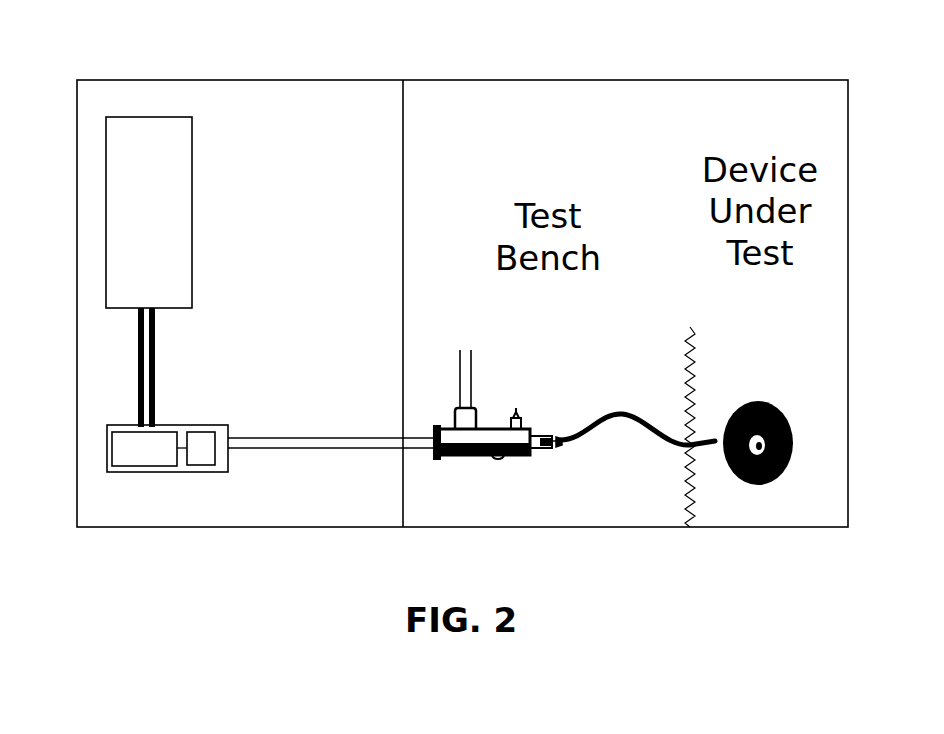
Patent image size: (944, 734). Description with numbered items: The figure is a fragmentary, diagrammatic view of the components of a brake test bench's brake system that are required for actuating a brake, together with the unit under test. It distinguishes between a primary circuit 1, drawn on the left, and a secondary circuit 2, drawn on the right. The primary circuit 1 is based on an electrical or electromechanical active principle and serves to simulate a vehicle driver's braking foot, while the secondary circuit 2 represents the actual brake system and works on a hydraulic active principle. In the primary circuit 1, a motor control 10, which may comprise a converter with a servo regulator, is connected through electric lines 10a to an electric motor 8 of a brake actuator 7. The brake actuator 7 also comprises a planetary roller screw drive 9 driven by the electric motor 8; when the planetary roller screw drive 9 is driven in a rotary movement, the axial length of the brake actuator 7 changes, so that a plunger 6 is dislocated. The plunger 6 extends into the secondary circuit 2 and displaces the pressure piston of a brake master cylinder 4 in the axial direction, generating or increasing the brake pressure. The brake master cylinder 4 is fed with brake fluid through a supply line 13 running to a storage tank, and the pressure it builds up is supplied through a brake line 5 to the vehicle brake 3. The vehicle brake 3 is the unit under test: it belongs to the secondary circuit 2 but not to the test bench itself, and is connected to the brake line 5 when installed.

The primary circuit 1 is at (272, 79).
The secondary circuit 2 is at (455, 79).
The vehicle brake 3 is at (790, 430).
The brake master cylinder 4 is at (497, 455).
The brake line 5 is at (602, 428).
The plunger 6 is at (372, 450).
The brake actuator 7 is at (158, 472).
The electric motor 8 is at (129, 472).
The planetary roller screw drive 9 is at (205, 472).
The motor control 10 is at (117, 207).
The electric lines 10a is at (140, 365).
The supply line 13 is at (466, 372).